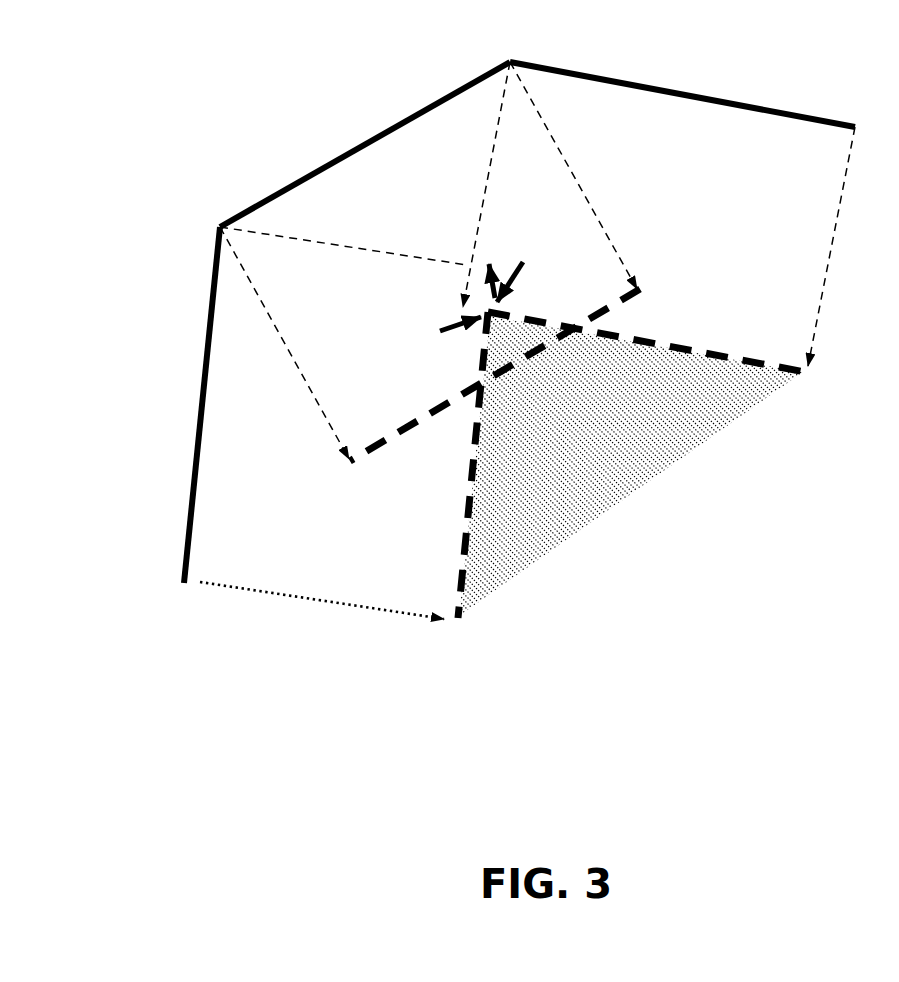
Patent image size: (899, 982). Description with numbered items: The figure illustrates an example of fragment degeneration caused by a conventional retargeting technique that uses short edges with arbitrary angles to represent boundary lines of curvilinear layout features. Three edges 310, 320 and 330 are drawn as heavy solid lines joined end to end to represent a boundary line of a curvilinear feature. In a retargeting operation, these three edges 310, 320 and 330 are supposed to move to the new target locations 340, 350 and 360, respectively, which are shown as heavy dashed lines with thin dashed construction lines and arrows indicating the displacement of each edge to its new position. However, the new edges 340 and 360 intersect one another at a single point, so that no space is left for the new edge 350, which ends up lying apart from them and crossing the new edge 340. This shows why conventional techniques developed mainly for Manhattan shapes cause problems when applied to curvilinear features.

The edge 310 is at (193, 437).
The edge 320 is at (330, 146).
The edge 330 is at (701, 93).
The new target location 340 is at (460, 505).
The new target location 350 is at (428, 407).
The new target location 360 is at (705, 350).